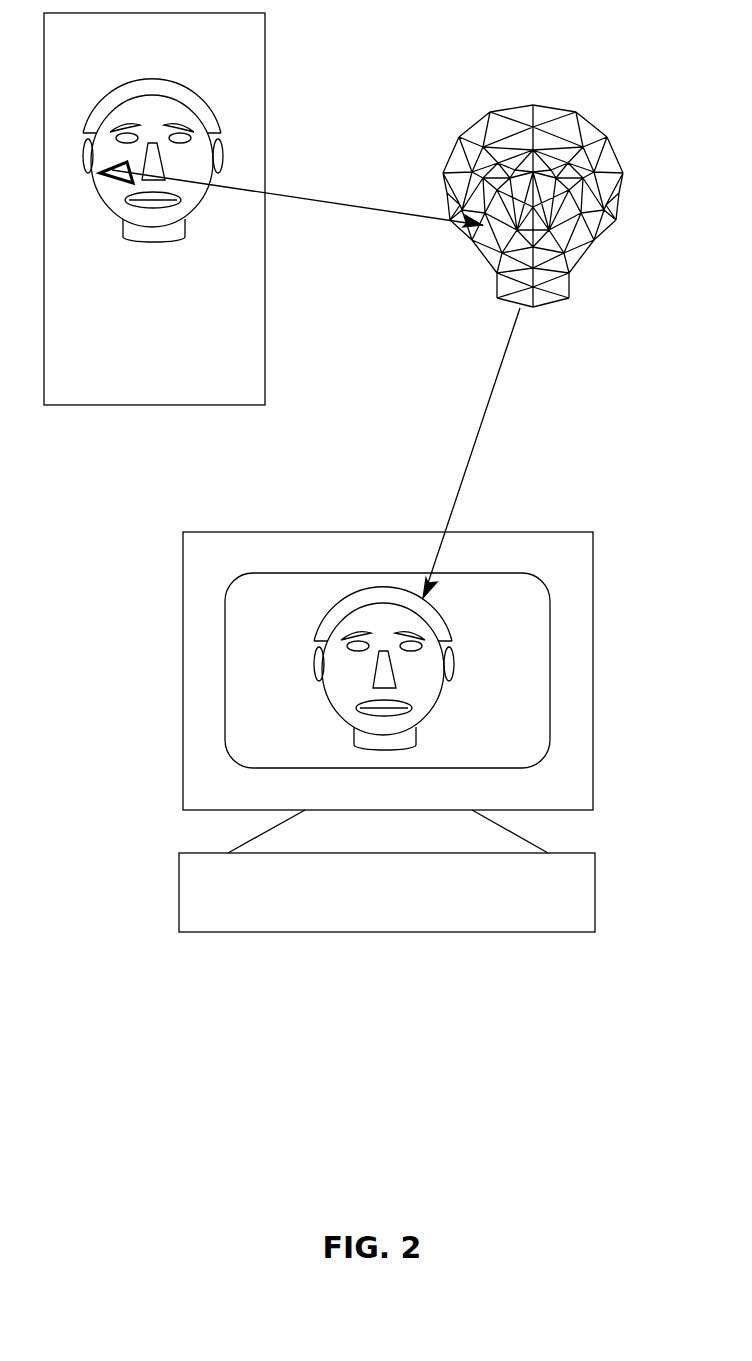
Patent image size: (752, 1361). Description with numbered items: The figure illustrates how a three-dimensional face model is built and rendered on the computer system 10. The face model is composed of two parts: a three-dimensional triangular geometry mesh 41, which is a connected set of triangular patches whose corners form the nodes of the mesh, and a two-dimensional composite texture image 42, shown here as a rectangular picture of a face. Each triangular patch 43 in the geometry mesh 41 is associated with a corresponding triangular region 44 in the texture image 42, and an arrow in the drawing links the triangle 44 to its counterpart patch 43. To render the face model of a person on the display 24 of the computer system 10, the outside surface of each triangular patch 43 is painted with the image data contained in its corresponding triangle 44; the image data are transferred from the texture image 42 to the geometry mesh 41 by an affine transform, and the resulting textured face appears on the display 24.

The computer system 10 is at (183, 852).
The display 24 is at (250, 615).
The geometry mesh 41 is at (515, 104).
The texture image 42 is at (244, 67).
The triangular patch 43 is at (470, 238).
The triangular region 44 is at (100, 173).